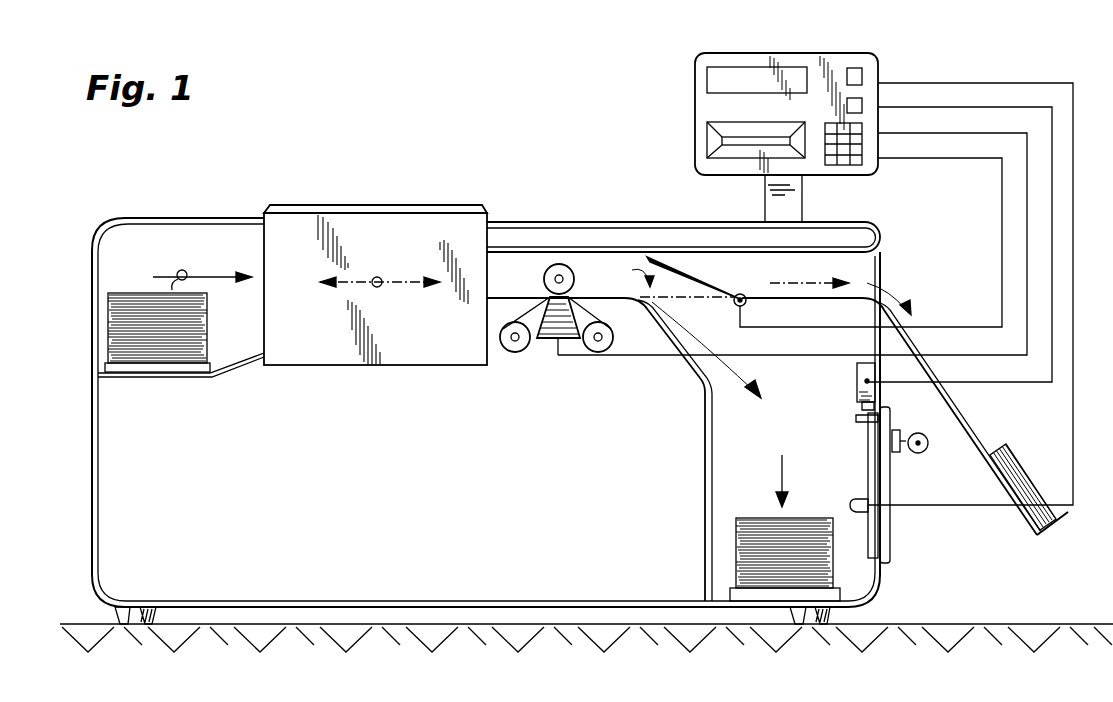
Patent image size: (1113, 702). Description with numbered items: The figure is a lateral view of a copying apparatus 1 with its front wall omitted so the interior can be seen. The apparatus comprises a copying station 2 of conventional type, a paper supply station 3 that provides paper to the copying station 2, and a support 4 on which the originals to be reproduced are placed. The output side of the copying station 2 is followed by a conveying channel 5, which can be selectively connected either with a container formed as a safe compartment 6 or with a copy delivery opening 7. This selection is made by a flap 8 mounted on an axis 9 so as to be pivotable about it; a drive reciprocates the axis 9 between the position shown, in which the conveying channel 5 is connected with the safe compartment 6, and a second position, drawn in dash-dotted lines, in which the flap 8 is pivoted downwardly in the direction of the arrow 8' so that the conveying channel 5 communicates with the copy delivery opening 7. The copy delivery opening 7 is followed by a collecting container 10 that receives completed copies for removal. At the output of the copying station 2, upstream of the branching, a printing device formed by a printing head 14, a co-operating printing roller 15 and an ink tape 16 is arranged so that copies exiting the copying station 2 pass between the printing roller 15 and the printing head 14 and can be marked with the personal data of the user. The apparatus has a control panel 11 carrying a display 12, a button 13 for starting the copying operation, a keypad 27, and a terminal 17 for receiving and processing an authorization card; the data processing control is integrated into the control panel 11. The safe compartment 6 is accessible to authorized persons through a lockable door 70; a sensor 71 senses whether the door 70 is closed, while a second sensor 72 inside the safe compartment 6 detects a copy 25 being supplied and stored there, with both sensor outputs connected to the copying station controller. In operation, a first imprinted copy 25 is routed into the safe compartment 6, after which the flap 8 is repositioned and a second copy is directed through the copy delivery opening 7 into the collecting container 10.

The copying apparatus 1 is at (436, 108).
The copying station 2 is at (404, 350).
The paper supply station 3 is at (140, 352).
The support 4 is at (388, 213).
The conveying channel 5 is at (510, 275).
The safe compartment 6 is at (737, 437).
The copy delivery opening 7 is at (870, 263).
The flap 8 is at (696, 278).
The arrow 8' is at (632, 278).
The axis 9 is at (735, 308).
The collecting container 10 is at (1068, 515).
The control panel 11 is at (697, 45).
The display 12 is at (743, 72).
The button 13 is at (858, 70).
The printing head 14 is at (548, 325).
The printing roller 15 is at (560, 265).
The ink tape 16 is at (612, 318).
The terminal 17 is at (725, 140).
The copy 25 is at (762, 512).
The keypad 27 is at (843, 160).
The door 70 is at (882, 488).
The sensor 71 is at (855, 380).
The second sensor 72 is at (860, 500).